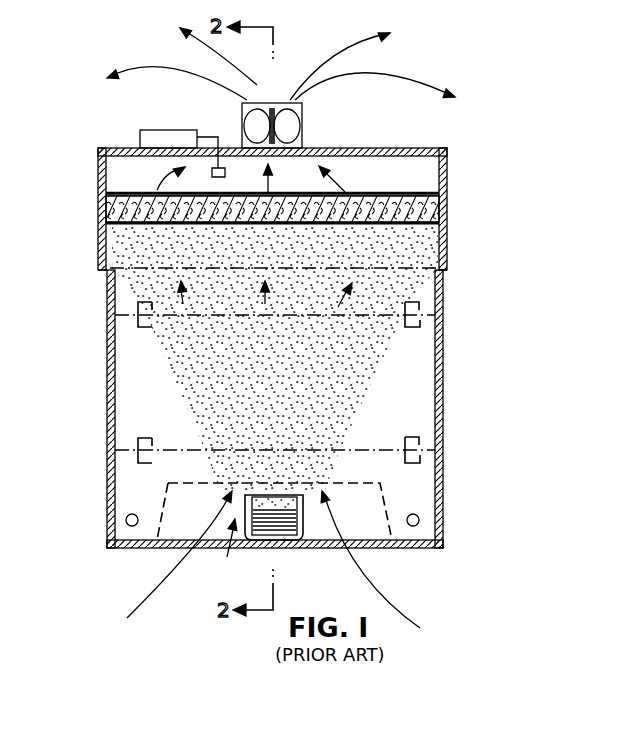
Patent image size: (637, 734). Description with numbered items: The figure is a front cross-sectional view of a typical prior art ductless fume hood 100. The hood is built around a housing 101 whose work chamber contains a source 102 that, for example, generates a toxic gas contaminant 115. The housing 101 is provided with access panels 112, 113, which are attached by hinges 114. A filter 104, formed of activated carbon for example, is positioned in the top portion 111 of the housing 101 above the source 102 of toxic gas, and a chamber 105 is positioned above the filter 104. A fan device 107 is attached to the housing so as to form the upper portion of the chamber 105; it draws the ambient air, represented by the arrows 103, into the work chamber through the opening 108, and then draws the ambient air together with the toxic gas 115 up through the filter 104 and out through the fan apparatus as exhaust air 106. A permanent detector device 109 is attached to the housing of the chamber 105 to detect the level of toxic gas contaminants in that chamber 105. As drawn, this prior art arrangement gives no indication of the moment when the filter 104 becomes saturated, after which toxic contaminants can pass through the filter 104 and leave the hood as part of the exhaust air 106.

The prior art ductless fume hood 100 is at (88, 407).
The housing 101 is at (442, 390).
The source 102 is at (287, 528).
The ambient air 103 is at (181, 573).
The filter 104 is at (110, 208).
The chamber 105 is at (397, 181).
The exhaust air 106 is at (371, 87).
The fan device 107 is at (302, 135).
The opening 108 is at (226, 551).
The permanent detector device 109 is at (171, 132).
The top portion 111 is at (440, 204).
The access panel 112 is at (108, 309).
The access panel 113 is at (430, 487).
The hinges 114 is at (116, 444).
The toxic gas contaminant 115 is at (283, 365).